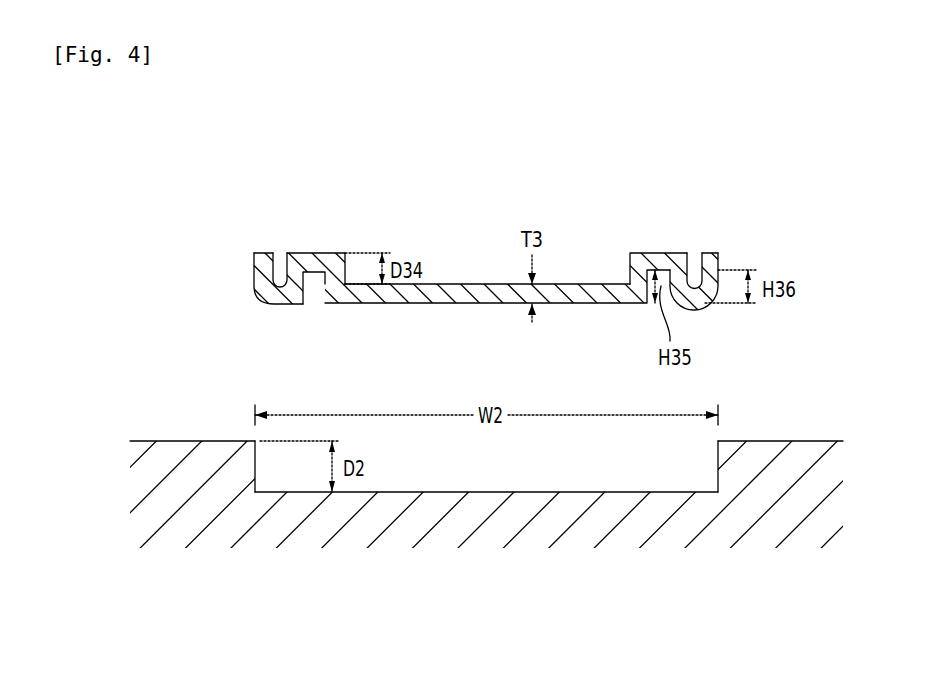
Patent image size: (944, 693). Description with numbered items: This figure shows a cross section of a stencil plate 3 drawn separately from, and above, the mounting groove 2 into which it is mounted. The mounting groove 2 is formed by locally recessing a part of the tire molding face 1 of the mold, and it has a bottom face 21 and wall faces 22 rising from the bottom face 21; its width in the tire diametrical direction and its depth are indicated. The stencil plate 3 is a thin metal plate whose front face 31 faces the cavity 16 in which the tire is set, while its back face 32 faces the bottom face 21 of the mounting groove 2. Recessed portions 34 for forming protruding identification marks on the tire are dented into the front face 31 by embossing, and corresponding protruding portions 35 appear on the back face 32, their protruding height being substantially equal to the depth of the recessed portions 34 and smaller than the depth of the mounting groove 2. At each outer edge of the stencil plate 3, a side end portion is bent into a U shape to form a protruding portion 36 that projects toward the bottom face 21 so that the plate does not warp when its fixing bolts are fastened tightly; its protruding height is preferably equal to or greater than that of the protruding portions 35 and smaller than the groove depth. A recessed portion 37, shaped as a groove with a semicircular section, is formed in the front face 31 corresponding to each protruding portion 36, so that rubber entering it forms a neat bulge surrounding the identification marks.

The tire molding face 1 is at (182, 441).
The mounting groove 2 is at (608, 441).
The bottom face 21 is at (527, 493).
The wall faces 22 is at (256, 467).
The stencil plate 3 is at (582, 241).
The cavity 16 is at (504, 167).
The front face 31 is at (318, 252).
The back face 32 is at (313, 273).
The recessed portions 34 is at (456, 283).
The protruding portions 35 is at (456, 304).
The protruding portion 36 is at (278, 305).
The recessed portion 37 is at (280, 252).